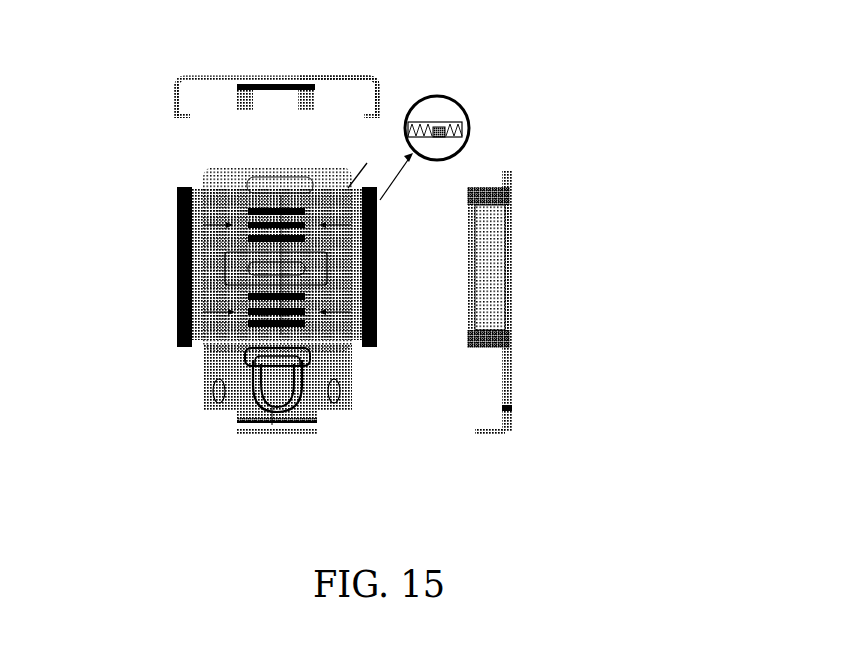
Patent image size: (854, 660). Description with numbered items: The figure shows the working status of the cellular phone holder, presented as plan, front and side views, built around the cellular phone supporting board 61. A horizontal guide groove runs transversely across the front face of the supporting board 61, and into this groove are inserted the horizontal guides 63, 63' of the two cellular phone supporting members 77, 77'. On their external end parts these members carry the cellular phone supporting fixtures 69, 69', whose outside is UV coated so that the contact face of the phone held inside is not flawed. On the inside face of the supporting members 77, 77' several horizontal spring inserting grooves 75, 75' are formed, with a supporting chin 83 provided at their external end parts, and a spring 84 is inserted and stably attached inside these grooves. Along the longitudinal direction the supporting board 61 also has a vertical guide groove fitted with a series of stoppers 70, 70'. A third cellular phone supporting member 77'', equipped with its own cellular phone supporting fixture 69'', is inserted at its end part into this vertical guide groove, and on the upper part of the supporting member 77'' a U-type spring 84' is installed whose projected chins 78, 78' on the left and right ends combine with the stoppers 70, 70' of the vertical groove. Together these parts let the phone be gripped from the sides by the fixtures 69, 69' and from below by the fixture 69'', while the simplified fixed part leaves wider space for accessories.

The cellular phone supporting board 61 is at (277, 78).
The horizontal guide 63 is at (273, 238).
The horizontal guide 63' is at (408, 148).
The cellular phone supporting fixture 69 is at (147, 193).
The cellular phone supporting fixture 69' is at (436, 192).
The cellular phone supporting fixture 69'' is at (415, 277).
The stopper 70 is at (242, 406).
The stopper 70' is at (380, 423).
The horizontal spring inserting groove 75 is at (254, 216).
The horizontal spring inserting groove 75' is at (368, 181).
The cellular phone supporting member 77 is at (238, 172).
The cellular phone supporting member 77' is at (449, 180).
The cellular phone supporting member 77'' is at (414, 461).
The projected chin 78 is at (211, 380).
The projected chin 78' is at (353, 385).
The supporting chin 83 is at (438, 122).
The spring 84 is at (379, 199).
The U-type spring 84' is at (276, 468).